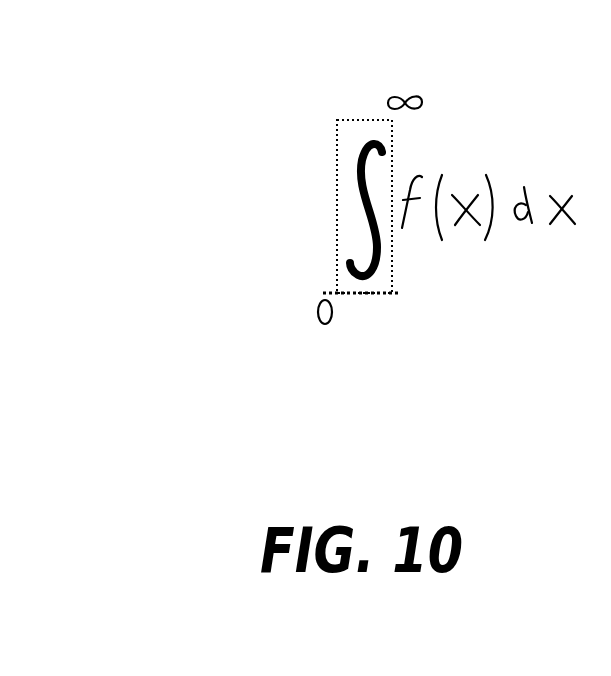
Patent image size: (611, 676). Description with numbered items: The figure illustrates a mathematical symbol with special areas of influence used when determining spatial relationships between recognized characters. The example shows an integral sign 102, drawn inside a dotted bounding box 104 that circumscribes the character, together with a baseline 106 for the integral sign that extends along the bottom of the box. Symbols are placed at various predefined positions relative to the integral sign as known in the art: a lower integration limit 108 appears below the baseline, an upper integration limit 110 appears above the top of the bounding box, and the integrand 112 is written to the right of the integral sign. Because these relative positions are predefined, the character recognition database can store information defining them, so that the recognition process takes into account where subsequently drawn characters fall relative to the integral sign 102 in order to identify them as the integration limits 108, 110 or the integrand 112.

The integral sign 102 is at (320, 198).
The bounding box 104 is at (335, 130).
The baseline 106 is at (400, 296).
The integration limit 108 is at (319, 344).
The integration limit 110 is at (406, 78).
The integrand 112 is at (485, 148).